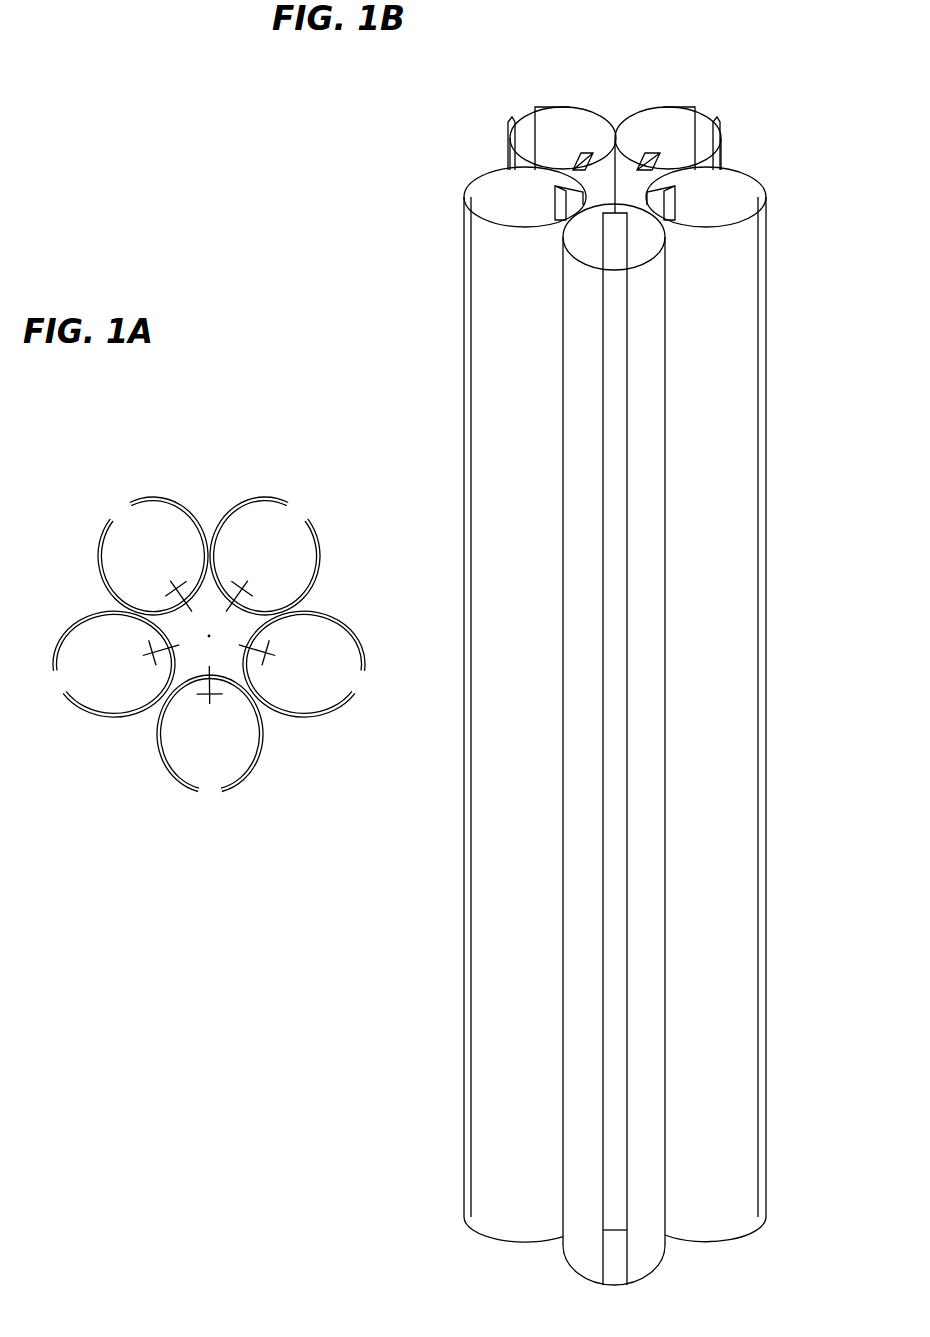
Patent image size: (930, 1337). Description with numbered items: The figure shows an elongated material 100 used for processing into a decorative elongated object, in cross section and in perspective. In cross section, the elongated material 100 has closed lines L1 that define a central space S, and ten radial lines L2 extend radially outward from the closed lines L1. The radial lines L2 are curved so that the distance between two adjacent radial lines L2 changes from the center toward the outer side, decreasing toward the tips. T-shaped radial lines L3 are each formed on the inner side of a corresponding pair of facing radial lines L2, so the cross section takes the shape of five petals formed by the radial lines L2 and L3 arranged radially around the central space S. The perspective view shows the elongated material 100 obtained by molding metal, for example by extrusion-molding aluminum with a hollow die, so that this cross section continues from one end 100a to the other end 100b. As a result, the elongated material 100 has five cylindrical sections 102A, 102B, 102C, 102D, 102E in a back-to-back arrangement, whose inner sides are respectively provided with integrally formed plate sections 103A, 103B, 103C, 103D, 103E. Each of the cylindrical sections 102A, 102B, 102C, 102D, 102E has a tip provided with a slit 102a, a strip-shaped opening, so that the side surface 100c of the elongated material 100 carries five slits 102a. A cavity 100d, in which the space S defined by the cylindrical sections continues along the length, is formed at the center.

In FIG. 1B, the elongated material 100 is at (353, 282).
In FIG. 1A, the elongated material 100 is at (207, 448).
In FIG. 1B, the one end 100a is at (557, 205).
In FIG. 1B, the other end 100b is at (493, 1240).
In FIG. 1B, the side surface 100c is at (465, 985).
In FIG. 1B, the cavity 100d is at (615, 140).
In FIG. 1B, the cylindrical section 102A is at (721, 148).
In FIG. 1B, the cylindrical section 102B is at (743, 180).
In FIG. 1B, the cylindrical section 102C is at (665, 282).
In FIG. 1B, the cylindrical section 102D is at (487, 180).
In FIG. 1B, the cylindrical section 102E is at (573, 108).
In FIG. 1B, the slit 102a is at (703, 120).
In FIG. 1B, the plate section 103A is at (665, 143).
In FIG. 1B, the plate section 103B is at (676, 213).
In FIG. 1B, the plate section 103C is at (602, 243).
In FIG. 1B, the plate section 103D is at (557, 212).
In FIG. 1B, the plate section 103E is at (512, 123).
In FIG. 1A, the closed lines L1 is at (243, 662).
In FIG. 1A, the radial lines L2 is at (153, 497).
In FIG. 1A, the T-shaped radial lines L3 is at (173, 582).
In FIG. 1A, the central space S is at (197, 673).